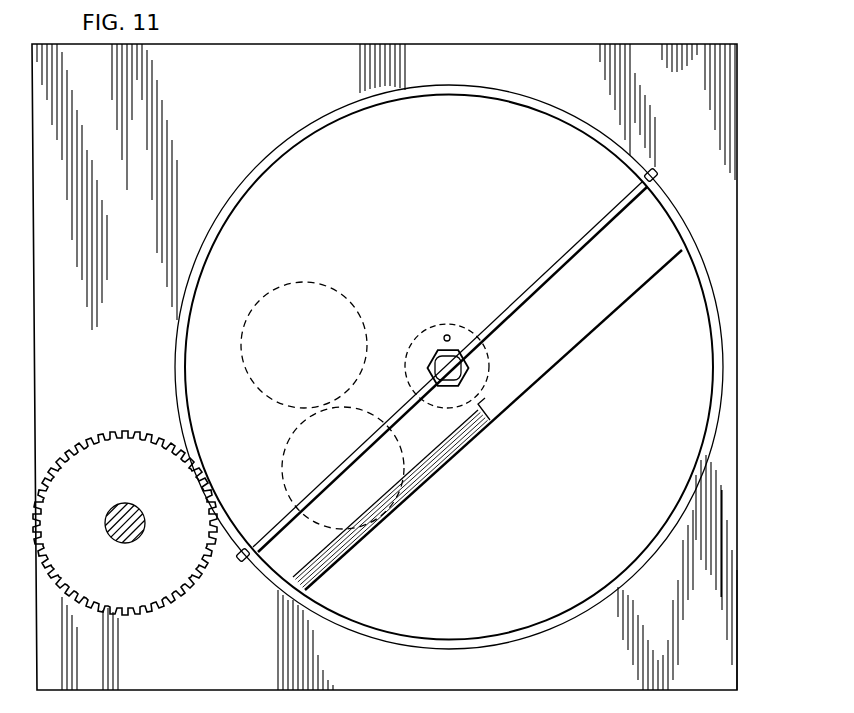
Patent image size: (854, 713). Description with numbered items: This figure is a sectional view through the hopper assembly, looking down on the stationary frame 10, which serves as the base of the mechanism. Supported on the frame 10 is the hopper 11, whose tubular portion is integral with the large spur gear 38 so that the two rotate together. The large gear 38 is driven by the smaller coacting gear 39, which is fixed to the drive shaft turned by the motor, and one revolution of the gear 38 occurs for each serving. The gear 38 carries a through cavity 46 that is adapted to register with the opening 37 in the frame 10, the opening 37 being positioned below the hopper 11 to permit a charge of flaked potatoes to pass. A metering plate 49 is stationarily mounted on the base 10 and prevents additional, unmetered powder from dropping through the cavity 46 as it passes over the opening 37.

The frame 10 is at (706, 146).
The hopper 11 is at (720, 350).
The opening 37 is at (242, 352).
The spur gear 38 is at (367, 632).
The coacting gear 39 is at (90, 441).
The through cavity 46 is at (285, 450).
The metering plate 49 is at (477, 431).